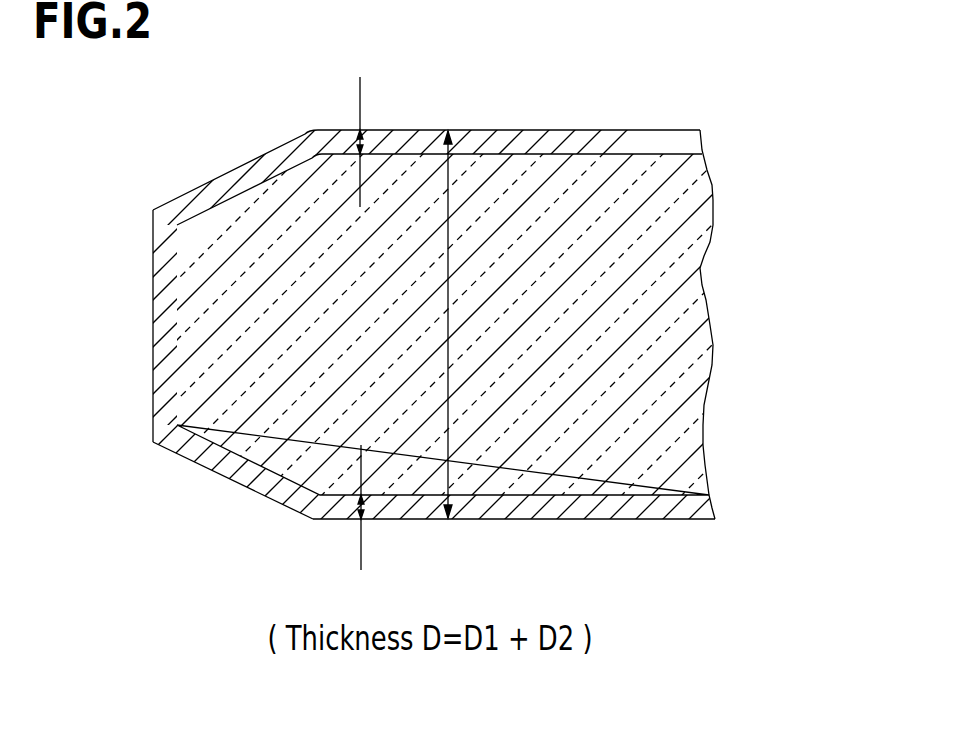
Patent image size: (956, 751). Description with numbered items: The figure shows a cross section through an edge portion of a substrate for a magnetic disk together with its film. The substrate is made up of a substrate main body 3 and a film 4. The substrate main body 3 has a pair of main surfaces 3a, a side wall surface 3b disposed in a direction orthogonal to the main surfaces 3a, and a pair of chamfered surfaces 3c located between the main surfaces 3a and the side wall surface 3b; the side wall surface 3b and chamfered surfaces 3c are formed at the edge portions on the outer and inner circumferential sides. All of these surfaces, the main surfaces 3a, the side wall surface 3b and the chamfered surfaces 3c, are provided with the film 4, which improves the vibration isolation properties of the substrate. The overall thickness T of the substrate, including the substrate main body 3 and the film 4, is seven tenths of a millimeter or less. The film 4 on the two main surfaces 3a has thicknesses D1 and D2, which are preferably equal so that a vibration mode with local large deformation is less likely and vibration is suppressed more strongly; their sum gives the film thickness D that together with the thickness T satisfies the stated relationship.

The substrate main body 3 is at (672, 338).
The film 4 is at (537, 130).
The main surfaces 3a is at (490, 130).
The side wall surface 3b is at (173, 292).
The chamfered surfaces 3c is at (258, 183).
The thickness of the film on one main surface D1 is at (373, 130).
The thickness of the film on the other main surface D2 is at (375, 494).
The thickness of the substrate T is at (461, 324).